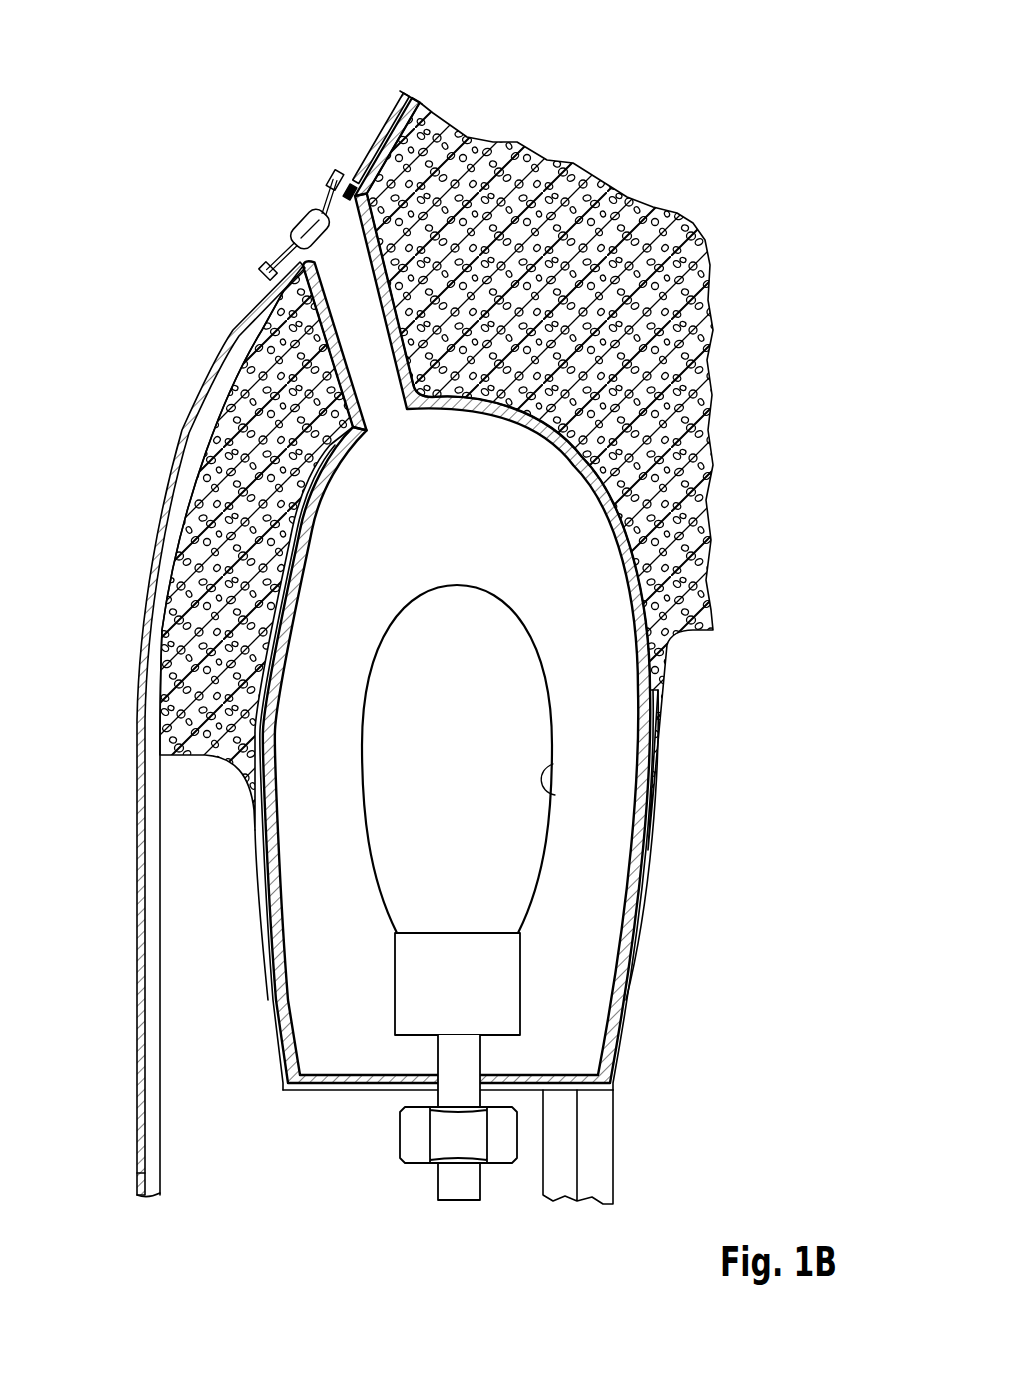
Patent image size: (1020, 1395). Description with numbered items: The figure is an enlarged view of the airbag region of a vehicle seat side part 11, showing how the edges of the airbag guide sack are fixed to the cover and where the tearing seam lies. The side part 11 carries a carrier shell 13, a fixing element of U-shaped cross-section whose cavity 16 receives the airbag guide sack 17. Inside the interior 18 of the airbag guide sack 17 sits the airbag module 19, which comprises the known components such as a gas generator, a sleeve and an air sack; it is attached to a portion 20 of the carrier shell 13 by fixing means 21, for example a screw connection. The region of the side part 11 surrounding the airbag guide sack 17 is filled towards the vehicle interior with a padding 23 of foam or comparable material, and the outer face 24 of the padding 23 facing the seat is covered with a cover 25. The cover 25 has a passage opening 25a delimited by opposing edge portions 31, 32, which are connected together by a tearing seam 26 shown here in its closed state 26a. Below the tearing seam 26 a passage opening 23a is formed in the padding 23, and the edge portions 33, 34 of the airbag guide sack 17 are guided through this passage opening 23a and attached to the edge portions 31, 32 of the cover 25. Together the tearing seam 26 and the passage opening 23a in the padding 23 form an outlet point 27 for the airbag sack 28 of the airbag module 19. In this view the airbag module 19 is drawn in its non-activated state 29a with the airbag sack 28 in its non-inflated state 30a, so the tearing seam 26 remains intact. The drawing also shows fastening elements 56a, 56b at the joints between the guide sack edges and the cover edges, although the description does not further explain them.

The side part 11 is at (391, 86).
The carrier shell 13 is at (350, 824).
The cavity 16 is at (287, 960).
The airbag guide sack 17 is at (392, 579).
The interior 18 is at (617, 563).
The airbag module 19 is at (563, 1066).
The portion 20 is at (333, 1093).
The fixing means 21 is at (413, 1147).
The padding 23 is at (373, 639).
The passage opening 23a is at (349, 382).
The outer face 24 is at (160, 690).
The cover 25 is at (233, 645).
The passage opening 25a is at (381, 138).
The tearing seam 26 is at (230, 206).
The closed state 26a is at (307, 230).
The outlet point 27 is at (310, 228).
The airbag sack 28 is at (562, 759).
The non-activated state 29a is at (459, 1117).
The non-inflated state 30a is at (555, 795).
The edge portion 31 is at (297, 240).
The edge portion 32 is at (330, 178).
The edge portion 33 is at (262, 299).
The edge portion 34 is at (368, 157).
The nut 56a is at (262, 267).
The nut 56b is at (328, 172).